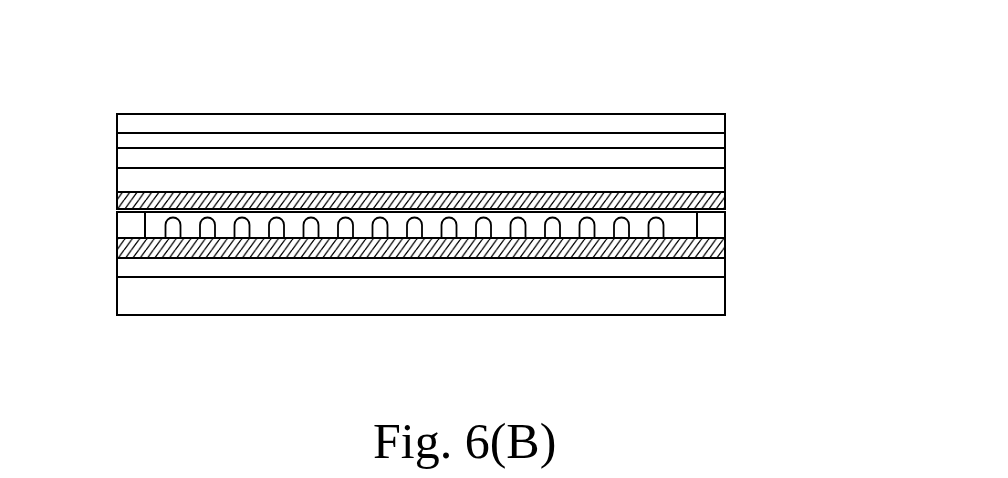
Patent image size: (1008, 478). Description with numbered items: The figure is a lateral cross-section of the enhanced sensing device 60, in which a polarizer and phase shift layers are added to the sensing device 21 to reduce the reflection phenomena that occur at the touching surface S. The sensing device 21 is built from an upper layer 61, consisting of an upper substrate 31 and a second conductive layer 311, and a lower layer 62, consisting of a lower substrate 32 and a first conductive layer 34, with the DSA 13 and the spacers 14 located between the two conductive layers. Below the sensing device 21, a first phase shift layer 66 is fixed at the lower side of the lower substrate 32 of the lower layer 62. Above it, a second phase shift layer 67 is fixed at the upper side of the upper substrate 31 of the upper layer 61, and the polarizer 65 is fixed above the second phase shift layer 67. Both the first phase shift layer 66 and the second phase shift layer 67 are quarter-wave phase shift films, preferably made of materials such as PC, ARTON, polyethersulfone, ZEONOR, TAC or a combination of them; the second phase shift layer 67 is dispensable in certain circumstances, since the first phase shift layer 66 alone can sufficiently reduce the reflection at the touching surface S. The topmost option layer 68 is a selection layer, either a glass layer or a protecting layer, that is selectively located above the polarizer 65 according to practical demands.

The enhanced sensing device 60 is at (85, 374).
The upper layer 61 is at (822, 108).
The lower layer 62 is at (806, 247).
The option layer 68 is at (133, 125).
The polarizer 65 is at (127, 143).
The second phase shift layer 67 is at (127, 162).
The upper substrate 31 is at (717, 180).
The second conductive layer 311 is at (730, 188).
The DSA 13 is at (717, 227).
The spacers 14 is at (657, 227).
The first conductive layer 34 is at (718, 248).
The lower substrate 32 is at (712, 266).
The first phase shift layer 66 is at (683, 303).
The sensing device 21 is at (102, 182).
The touching surface S is at (205, 74).